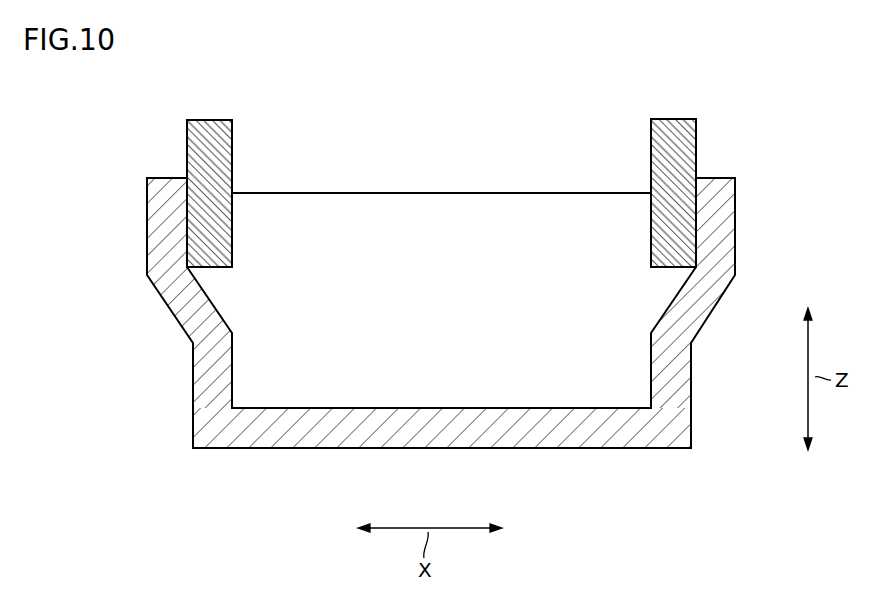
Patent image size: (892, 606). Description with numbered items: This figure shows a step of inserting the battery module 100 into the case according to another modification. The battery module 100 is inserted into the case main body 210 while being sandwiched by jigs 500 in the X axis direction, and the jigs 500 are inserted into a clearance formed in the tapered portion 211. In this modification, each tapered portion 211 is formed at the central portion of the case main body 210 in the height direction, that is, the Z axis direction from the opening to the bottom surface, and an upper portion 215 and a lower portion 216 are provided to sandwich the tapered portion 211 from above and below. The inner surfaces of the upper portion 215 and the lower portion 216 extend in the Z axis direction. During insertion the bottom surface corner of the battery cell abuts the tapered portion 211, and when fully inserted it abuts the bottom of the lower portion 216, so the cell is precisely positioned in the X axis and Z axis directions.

The battery module 100 is at (440, 207).
The case main body 210 is at (753, 265).
The tapered portion 211 is at (182, 307).
The upper portion 215 is at (161, 217).
The lower portion 216 is at (207, 400).
The jig 500 is at (206, 132).